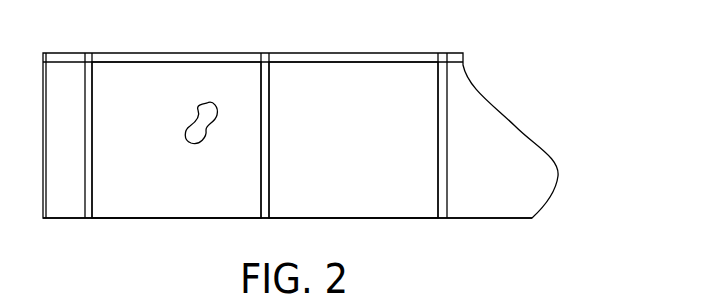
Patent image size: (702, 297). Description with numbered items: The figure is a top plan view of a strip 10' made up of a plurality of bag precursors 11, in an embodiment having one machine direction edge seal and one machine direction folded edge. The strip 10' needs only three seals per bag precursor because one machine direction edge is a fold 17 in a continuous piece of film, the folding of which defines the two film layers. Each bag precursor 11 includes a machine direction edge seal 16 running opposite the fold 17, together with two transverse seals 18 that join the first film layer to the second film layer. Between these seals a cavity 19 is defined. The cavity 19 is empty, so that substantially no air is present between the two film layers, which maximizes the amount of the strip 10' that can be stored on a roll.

The strip 10' is at (335, 135).
The bag precursor 11 is at (202, 197).
The machine direction edge seal 16 is at (141, 54).
The fold 17 is at (130, 219).
The transverse seal 18 is at (93, 146).
The cavity 19 is at (196, 111).